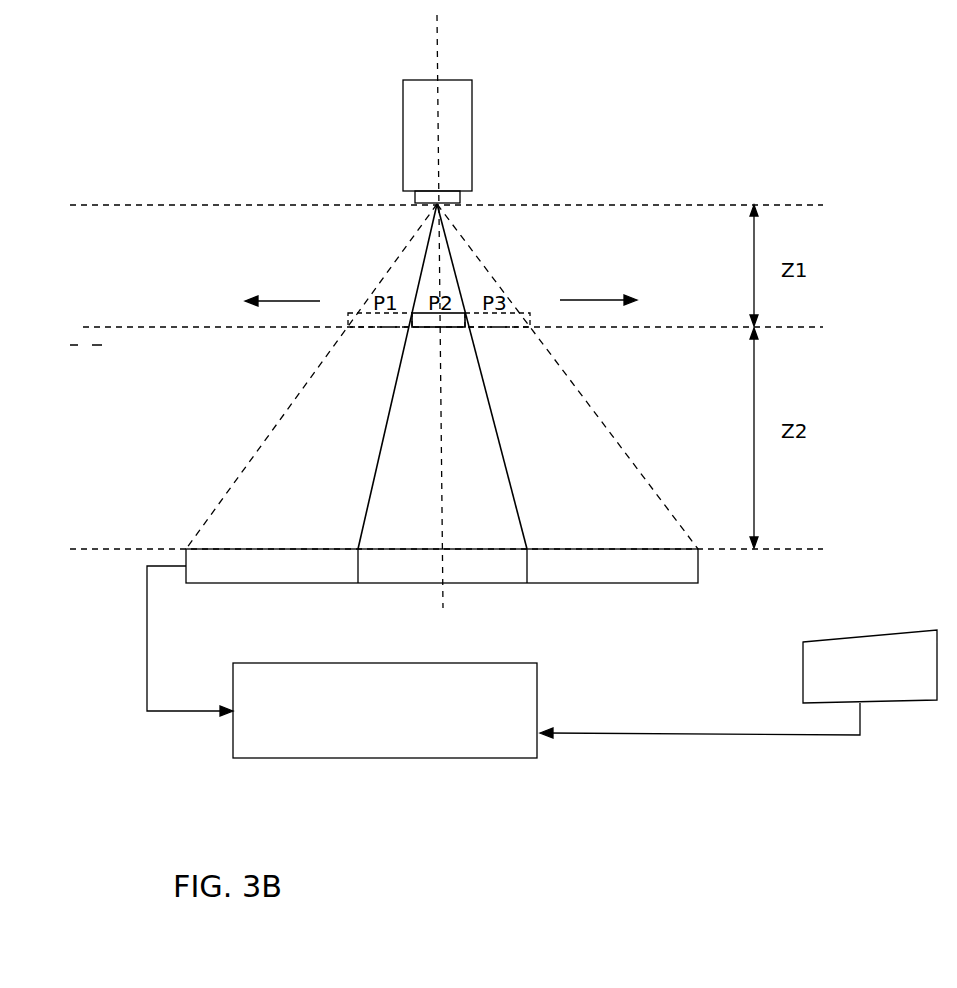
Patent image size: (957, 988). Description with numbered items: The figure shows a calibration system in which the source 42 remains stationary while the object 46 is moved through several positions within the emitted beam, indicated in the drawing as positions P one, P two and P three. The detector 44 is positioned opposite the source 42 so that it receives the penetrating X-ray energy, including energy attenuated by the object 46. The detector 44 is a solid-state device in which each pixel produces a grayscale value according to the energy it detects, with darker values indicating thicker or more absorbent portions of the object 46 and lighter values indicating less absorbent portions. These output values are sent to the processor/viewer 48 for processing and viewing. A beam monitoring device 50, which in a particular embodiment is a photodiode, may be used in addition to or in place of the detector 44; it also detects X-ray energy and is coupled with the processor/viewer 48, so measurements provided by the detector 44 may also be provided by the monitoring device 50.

The source 42 is at (424, 119).
The detector 44 is at (655, 584).
The object 46 is at (425, 328).
The processor/viewer 48 is at (375, 725).
The monitoring device 50 is at (884, 681).